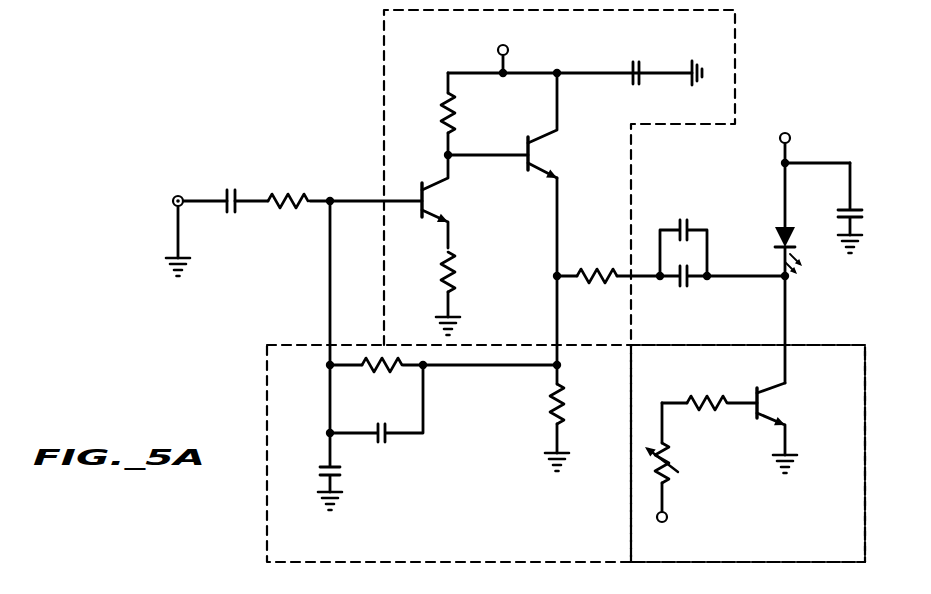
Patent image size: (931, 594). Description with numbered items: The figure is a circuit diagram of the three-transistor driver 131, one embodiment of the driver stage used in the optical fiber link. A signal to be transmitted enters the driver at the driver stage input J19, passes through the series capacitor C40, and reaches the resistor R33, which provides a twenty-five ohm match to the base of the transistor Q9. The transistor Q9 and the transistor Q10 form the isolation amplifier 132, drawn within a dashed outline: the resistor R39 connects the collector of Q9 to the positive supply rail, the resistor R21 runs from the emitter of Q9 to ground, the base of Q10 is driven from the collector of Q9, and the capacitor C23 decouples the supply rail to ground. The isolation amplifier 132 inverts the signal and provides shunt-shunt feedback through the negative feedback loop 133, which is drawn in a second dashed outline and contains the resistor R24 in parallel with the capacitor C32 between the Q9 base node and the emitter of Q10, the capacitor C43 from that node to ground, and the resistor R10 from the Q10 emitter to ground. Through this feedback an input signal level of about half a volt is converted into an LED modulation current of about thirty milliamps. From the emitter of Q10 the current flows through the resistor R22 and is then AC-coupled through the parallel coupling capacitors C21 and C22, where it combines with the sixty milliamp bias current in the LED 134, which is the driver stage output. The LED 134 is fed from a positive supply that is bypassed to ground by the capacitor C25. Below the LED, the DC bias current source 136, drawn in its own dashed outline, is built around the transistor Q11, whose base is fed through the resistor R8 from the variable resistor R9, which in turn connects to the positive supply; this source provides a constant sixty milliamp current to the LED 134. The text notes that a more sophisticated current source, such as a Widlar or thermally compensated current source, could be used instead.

The 3-transistor driver 131 is at (230, 54).
The isolation amplifier 132 is at (737, 48).
The negative feedback loop 133 is at (298, 345).
The LED 134 is at (779, 222).
The DC bias current source 136 is at (808, 345).
The driver stage input J19 is at (175, 194).
The capacitor C40 is at (233, 194).
The resistor R33 is at (299, 194).
The resistor R39 is at (456, 121).
The transistor Q9 is at (430, 203).
The resistor R21 is at (455, 263).
The transistor Q10 is at (537, 161).
The capacitor C23 is at (641, 66).
The resistor R22 is at (607, 268).
The capacitor C22 is at (686, 226).
The capacitor C21 is at (689, 283).
The capacitor C25 is at (855, 207).
The transistor Q11 is at (772, 409).
The resistor R8 is at (700, 392).
The resistor R9 is at (672, 456).
The resistor R24 is at (398, 375).
The capacitor C32 is at (388, 441).
The capacitor C43 is at (340, 473).
The resistor R10 is at (546, 405).